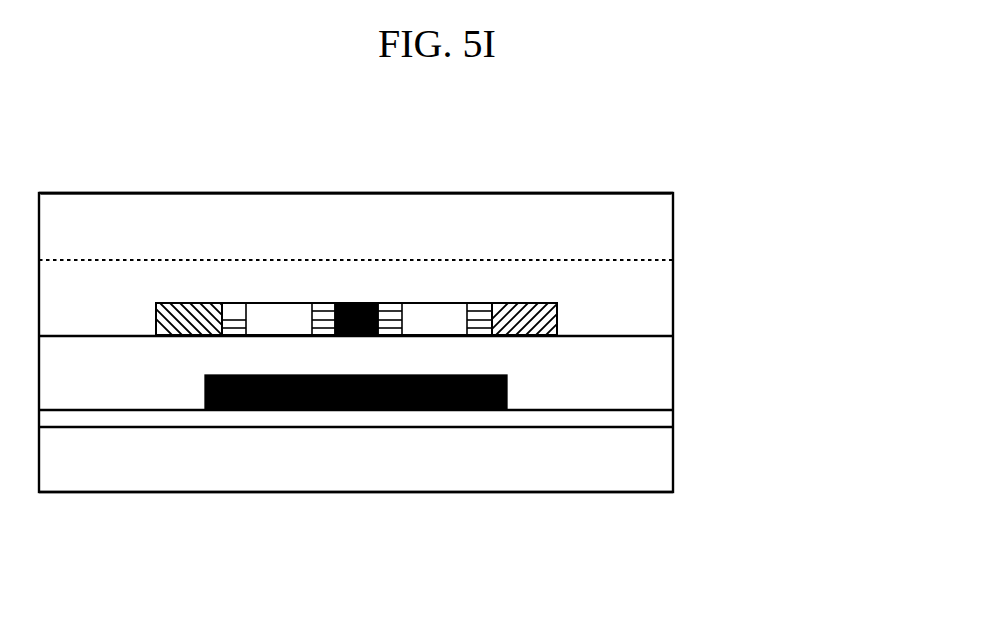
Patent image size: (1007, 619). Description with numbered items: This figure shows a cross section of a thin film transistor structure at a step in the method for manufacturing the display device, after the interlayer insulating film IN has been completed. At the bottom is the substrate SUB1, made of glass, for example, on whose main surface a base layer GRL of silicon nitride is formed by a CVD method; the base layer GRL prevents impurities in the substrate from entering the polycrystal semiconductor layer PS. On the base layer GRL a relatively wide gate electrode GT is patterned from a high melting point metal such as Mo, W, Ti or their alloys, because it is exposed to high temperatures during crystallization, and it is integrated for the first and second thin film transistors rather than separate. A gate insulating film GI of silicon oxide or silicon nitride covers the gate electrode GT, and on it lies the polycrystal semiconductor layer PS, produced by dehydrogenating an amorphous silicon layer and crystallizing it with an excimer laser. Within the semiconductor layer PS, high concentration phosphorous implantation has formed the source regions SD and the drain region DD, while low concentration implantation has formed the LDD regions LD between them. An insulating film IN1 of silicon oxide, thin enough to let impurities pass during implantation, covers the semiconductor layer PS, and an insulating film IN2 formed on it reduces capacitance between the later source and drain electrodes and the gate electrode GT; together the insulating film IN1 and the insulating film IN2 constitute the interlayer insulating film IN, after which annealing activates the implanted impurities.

The interlayer insulating film IN is at (819, 195).
The insulating film IN1 is at (640, 290).
The insulating film IN2 is at (640, 228).
The polycrystal semiconductor layer PS is at (558, 322).
The drain region DD is at (190, 318).
The LDD region LD is at (235, 320).
The source region SD is at (527, 320).
The gate insulating film GI is at (640, 385).
The gate electrode GT is at (267, 408).
The base layer GRL is at (647, 420).
The substrate SUB1 is at (633, 467).